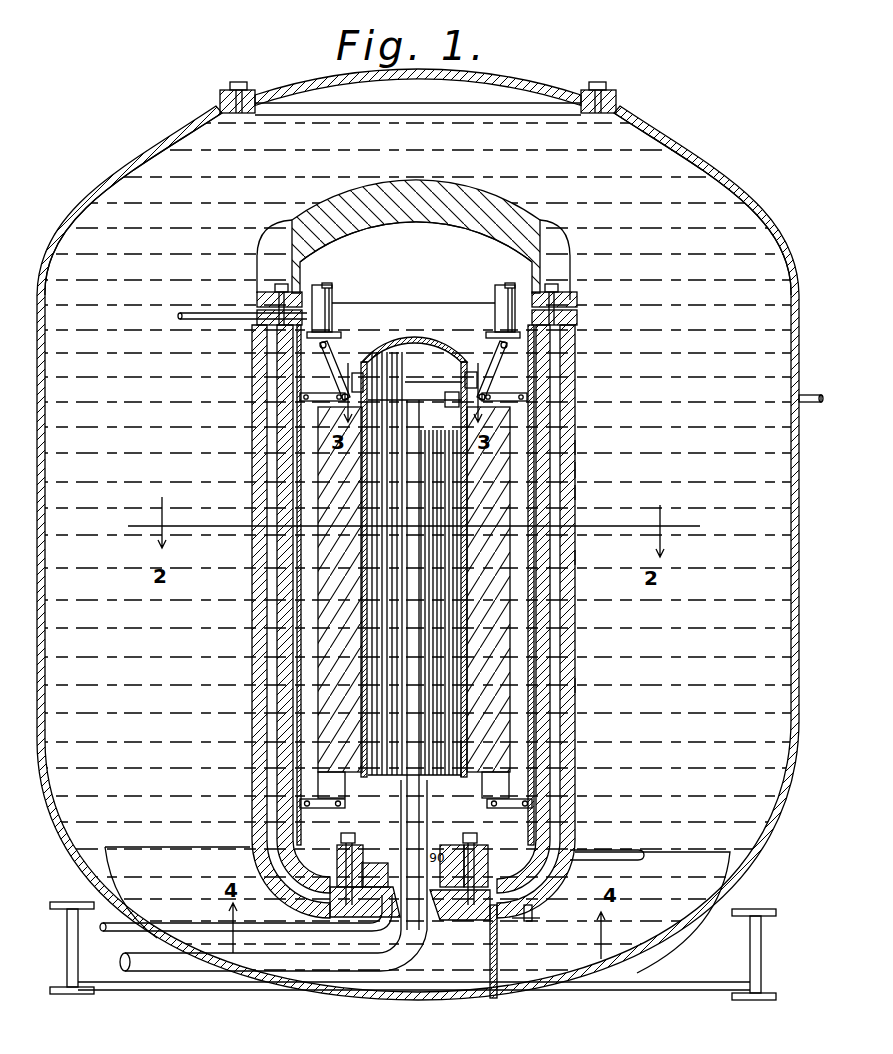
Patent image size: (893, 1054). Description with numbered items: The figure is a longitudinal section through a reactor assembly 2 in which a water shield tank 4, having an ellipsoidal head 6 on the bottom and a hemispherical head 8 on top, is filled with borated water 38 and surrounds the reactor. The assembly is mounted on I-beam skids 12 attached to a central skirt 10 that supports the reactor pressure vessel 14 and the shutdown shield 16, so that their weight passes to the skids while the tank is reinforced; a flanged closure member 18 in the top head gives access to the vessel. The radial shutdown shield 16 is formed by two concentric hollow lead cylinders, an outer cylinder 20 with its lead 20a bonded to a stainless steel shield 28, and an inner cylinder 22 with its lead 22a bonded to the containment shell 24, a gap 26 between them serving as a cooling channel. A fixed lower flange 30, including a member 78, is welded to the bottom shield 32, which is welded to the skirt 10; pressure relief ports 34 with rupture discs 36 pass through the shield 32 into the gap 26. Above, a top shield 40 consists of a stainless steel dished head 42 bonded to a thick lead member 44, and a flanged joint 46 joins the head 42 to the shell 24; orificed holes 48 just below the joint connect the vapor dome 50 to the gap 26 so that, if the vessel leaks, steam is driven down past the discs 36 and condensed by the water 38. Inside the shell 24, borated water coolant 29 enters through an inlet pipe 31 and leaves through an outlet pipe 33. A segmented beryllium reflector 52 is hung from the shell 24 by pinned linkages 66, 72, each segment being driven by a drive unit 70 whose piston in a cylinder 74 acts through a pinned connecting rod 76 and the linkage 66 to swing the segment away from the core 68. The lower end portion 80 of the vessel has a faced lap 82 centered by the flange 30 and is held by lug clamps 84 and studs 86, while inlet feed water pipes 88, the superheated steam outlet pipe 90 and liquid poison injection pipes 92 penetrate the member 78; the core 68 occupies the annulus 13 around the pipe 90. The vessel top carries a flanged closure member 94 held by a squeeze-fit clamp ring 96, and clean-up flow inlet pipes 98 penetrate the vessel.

The reactor assembly 2 is at (124, 163).
The water shield tank 4 is at (62, 226).
The ellipsoidal head 6 is at (713, 902).
The hemispherical head 8 is at (646, 130).
The central skirt 10 is at (495, 998).
The I-beam skids 12 is at (764, 908).
The annulus 13 is at (415, 563).
The reactor pressure vessel 14 is at (468, 766).
The radial shutdown shield 16 is at (580, 494).
The flanged closure member 18 is at (527, 76).
The outer cylinder 20 is at (578, 449).
The lead 20a is at (578, 472).
The inner cylinder 22 is at (262, 629).
The lead 22a is at (285, 667).
The containment shell 24 is at (297, 709).
The gap 26 is at (578, 686).
The stainless steel shield 28 is at (578, 560).
The borated water coolant 29 is at (457, 333).
The fixed lower flange 30 is at (376, 792).
The inlet pipe 31 is at (612, 852).
The bottom shield 32 is at (539, 927).
The outlet pipe 33 is at (212, 312).
The pressure relief ports 34 is at (533, 914).
The rupture discs 36 is at (516, 926).
The borated water 38 is at (701, 592).
The top shield 40 is at (514, 212).
The stainless steel dished head 42 is at (440, 239).
The lead member 44 is at (446, 187).
The flanged joint 46 is at (572, 302).
The orificed holes 48 is at (562, 326).
The vapor dome 50 is at (437, 279).
The beryllium reflector 52 is at (414, 589).
The pinned linkage 66 is at (355, 372).
The reactor core 68 is at (428, 665).
The drive unit 70 is at (334, 301).
The pinned linkage 72 is at (416, 819).
The cylinder 74 is at (321, 288).
The pinned connecting rod 76 is at (413, 371).
The member 78 is at (345, 879).
The lower end portion 80 is at (432, 850).
The faced lap 82 is at (380, 862).
The lug clamps 84 is at (488, 864).
The studs 86 is at (470, 834).
The inlet feed water pipes 88 is at (596, 948).
The superheated steam outlet pipe 90 is at (122, 958).
The liquid poison injection pipes 92 is at (176, 925).
The flanged closure member 94 is at (426, 341).
The squeeze-fit clamp ring 96 is at (471, 372).
The clean-up flow inlet pipes 98 is at (450, 392).